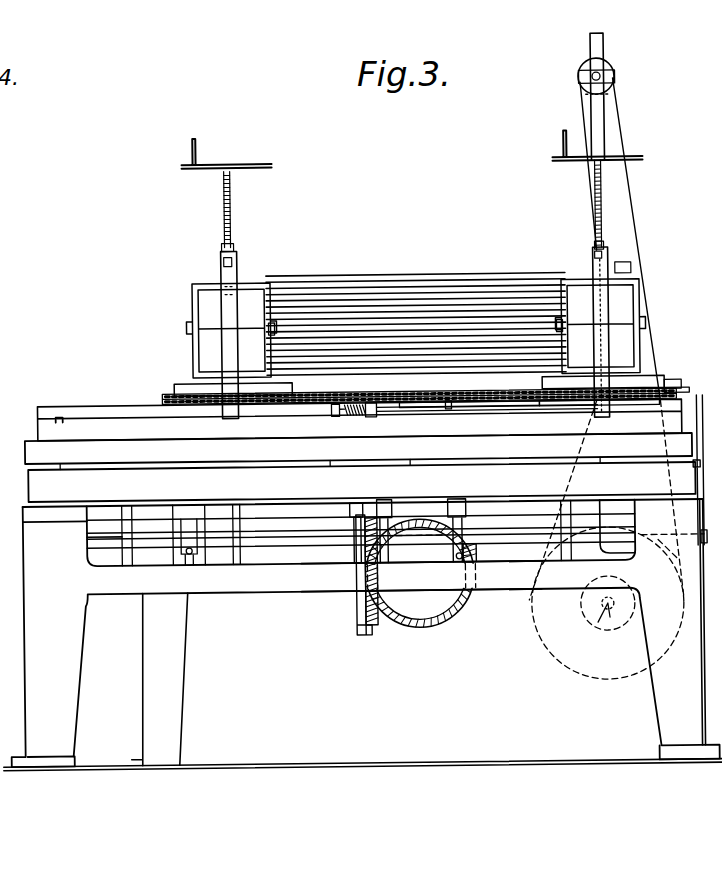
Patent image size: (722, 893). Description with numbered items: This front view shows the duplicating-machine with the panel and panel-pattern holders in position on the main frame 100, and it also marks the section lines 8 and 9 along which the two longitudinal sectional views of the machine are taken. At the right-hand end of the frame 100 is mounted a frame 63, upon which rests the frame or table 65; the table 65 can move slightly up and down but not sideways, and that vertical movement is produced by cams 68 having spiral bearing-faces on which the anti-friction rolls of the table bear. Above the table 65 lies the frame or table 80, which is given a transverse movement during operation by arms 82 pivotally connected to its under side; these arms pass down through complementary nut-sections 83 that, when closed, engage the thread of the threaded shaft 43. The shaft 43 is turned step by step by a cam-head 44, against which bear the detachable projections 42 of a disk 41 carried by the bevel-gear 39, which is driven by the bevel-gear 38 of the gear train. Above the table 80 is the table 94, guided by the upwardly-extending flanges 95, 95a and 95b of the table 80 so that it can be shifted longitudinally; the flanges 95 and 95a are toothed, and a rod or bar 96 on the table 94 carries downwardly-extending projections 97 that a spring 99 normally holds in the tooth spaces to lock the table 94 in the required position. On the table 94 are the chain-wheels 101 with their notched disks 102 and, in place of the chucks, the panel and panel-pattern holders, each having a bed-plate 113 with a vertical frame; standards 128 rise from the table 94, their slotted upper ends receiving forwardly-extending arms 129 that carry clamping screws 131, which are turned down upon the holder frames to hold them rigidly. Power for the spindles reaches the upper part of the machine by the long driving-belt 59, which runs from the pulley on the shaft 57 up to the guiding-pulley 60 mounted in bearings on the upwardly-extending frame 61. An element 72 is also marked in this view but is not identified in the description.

The section line 8 is at (157, 345).
The section line 9 is at (415, 232).
The bevel-gear 38 is at (452, 622).
The bevel-gear 39 is at (371, 626).
The disk 41 is at (353, 548).
The detachable projections 42 is at (358, 637).
The threaded shaft 43 is at (560, 500).
The cam-head 44 is at (349, 510).
The shaft 57 is at (608, 603).
The driving-belt 59 is at (636, 208).
The guiding-pulley 60 is at (614, 88).
The upwardly-extending frame 61 is at (606, 118).
The frame 63 is at (361, 482).
The frame or table 65 is at (358, 451).
The cams 68 is at (361, 532).
The support post 72 is at (578, 501).
The frame or table 80 is at (449, 410).
The arms 82 is at (454, 546).
The nut-section 83 is at (712, 420).
The table 94 is at (92, 403).
The flange 95 is at (650, 411).
The flange 95a is at (500, 408).
The flange 95b is at (62, 418).
The rod or bar 96 is at (545, 419).
The projections 97 is at (432, 408).
The spring 99 is at (356, 406).
The frame 100 is at (672, 560).
The chain-wheels 101 is at (684, 390).
The disks 102 is at (676, 383).
The bed-plate 113 is at (660, 376).
The standards 128 is at (236, 275).
The arms 129 is at (222, 258).
The clamping screws 131 is at (234, 213).